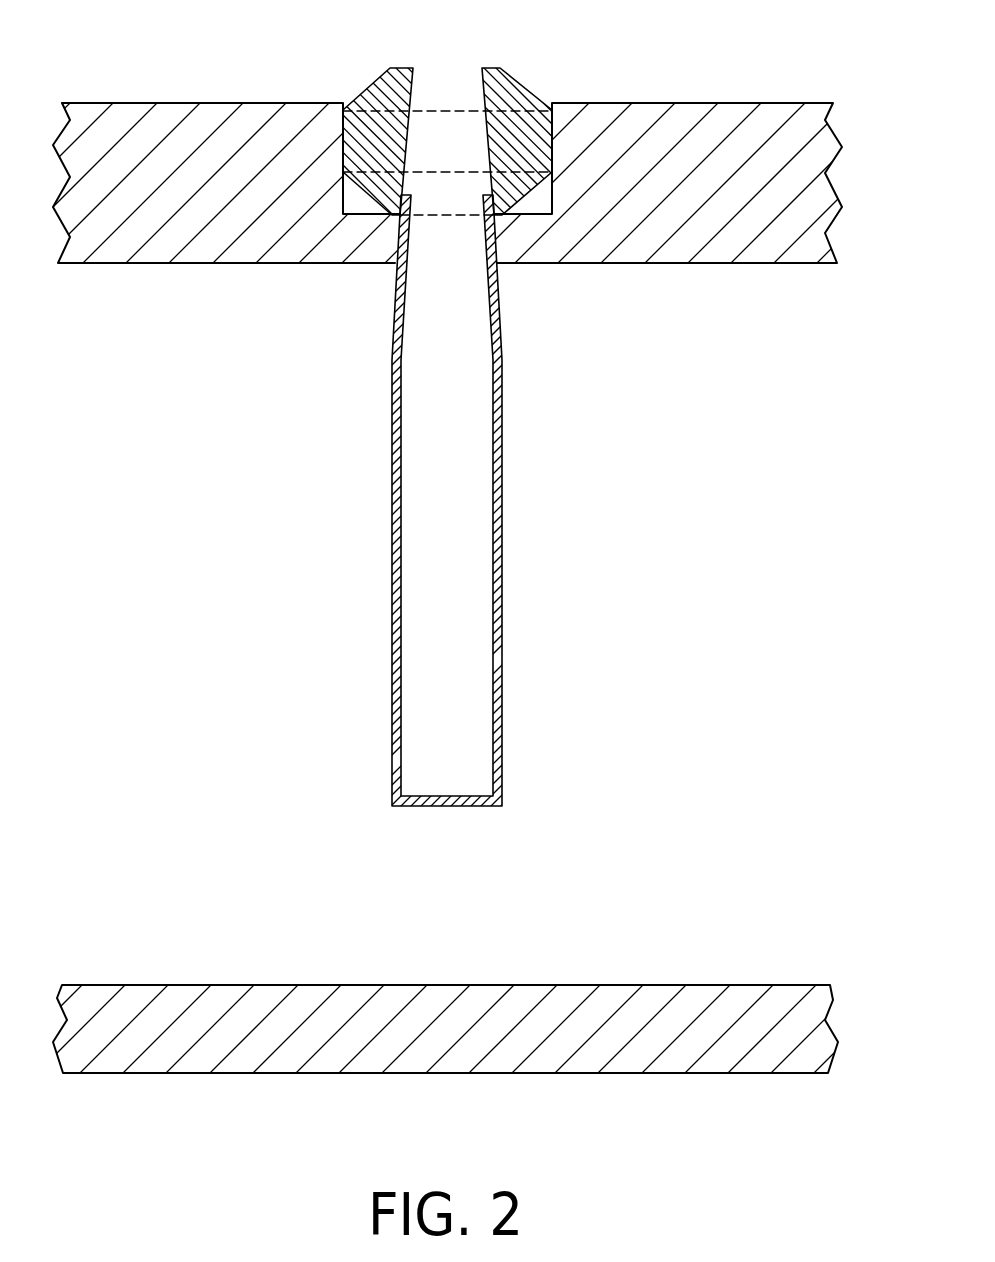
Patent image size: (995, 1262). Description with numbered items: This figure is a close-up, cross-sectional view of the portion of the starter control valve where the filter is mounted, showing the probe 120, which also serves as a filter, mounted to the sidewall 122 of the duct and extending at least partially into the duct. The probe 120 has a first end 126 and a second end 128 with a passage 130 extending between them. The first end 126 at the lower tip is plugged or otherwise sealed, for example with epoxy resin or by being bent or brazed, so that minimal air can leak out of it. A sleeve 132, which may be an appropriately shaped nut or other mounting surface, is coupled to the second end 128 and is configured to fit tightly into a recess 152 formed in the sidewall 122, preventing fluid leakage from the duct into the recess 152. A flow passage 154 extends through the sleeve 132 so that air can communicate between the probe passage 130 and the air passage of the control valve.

The probe 120 is at (497, 539).
The sidewall 122 is at (647, 111).
The first end 126 is at (447, 807).
The second end 128 is at (395, 98).
The passage 130 is at (411, 493).
The sleeve 132 is at (522, 88).
The recess 152 is at (540, 208).
The flow passage 154 is at (473, 158).